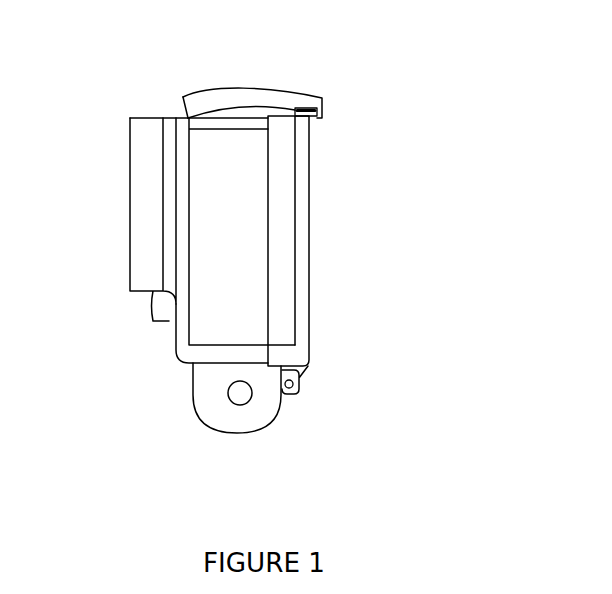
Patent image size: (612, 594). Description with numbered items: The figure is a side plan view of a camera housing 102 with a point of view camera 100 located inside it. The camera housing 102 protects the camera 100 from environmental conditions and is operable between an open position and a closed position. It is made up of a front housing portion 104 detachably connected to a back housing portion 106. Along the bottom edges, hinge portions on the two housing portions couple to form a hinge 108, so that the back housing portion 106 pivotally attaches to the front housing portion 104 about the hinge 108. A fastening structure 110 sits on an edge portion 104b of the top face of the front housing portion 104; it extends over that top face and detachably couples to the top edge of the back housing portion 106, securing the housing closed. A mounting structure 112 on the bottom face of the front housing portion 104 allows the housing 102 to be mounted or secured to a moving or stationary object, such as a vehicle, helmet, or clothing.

The point of view camera 100 is at (252, 198).
The camera housing 102 is at (182, 363).
The front housing portion 104 is at (174, 329).
The edge portion of the top face of the front housing portion 104b is at (188, 118).
The back housing portion 106 is at (303, 195).
The hinge 108 is at (300, 384).
The fastening structure 110 is at (263, 97).
The mounting structure 112 is at (252, 422).